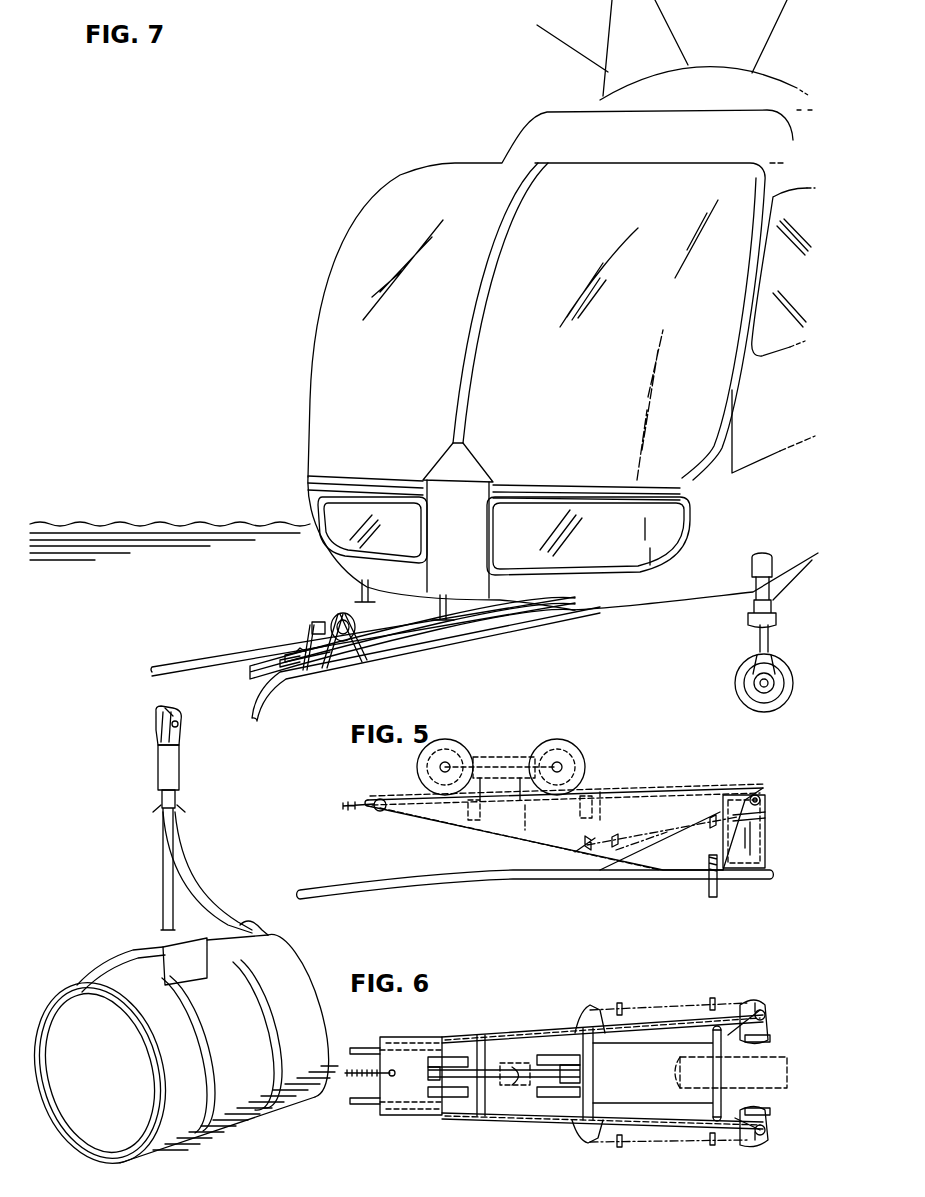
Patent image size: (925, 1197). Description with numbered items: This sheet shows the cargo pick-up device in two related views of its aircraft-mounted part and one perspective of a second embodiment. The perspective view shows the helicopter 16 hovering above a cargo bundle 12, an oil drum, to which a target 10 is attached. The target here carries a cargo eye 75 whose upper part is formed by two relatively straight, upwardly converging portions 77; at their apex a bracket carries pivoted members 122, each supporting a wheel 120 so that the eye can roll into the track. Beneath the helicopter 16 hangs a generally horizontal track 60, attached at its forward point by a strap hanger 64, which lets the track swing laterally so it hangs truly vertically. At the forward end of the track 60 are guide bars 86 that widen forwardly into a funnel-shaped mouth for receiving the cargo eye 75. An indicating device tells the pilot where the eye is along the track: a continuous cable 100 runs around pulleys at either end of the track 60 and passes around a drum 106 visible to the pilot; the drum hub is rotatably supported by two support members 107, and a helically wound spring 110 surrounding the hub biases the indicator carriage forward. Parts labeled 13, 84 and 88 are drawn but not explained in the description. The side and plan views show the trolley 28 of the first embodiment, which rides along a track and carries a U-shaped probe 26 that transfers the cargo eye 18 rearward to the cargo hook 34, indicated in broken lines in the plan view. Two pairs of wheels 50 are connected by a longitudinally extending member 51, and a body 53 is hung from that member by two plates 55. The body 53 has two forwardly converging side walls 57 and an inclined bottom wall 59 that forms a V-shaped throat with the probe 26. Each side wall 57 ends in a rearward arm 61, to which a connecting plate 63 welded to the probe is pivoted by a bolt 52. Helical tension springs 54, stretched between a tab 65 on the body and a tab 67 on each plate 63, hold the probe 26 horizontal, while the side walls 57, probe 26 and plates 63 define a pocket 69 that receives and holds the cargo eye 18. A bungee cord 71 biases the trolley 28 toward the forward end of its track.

In FIG. 7, the target 10 is at (200, 800).
In FIG. 7, the cargo bundle 12 is at (100, 950).
In FIG. 7, the cargo hook mount 13 is at (285, 699).
In FIG. 7, the helicopter 16 is at (275, 300).
In FIG. 5, the cargo eye 18 is at (722, 893).
In FIG. 6, the cargo eye 18 is at (713, 1085).
In FIG. 5, the probe 26 is at (348, 898).
In FIG. 6, the probe 26 is at (360, 1046).
In FIG. 5, the trolley 28 is at (733, 790).
In FIG. 6, the trolley 28 is at (525, 1030).
In FIG. 6, the cargo hook 34 is at (788, 1057).
In FIG. 5, the wheels 50 is at (460, 760).
In FIG. 6, the wheels 50 is at (440, 1100).
In FIG. 5, the longitudinally extending member 51 is at (520, 768).
In FIG. 6, the longitudinally extending member 51 is at (493, 1068).
In FIG. 5, the bolt 52 is at (765, 800).
In FIG. 6, the bolt 52 is at (765, 1010).
In FIG. 5, the body 53 is at (628, 786).
In FIG. 6, the body 53 is at (416, 1086).
In FIG. 5, the helical tension springs 54 is at (613, 860).
In FIG. 6, the helical tension springs 54 is at (620, 1003).
In FIG. 5, the plates 55 is at (518, 768).
In FIG. 6, the plates 55 is at (510, 1095).
In FIG. 5, the side walls 57 is at (435, 812).
In FIG. 6, the side walls 57 is at (470, 1037).
In FIG. 5, the bottom wall 59 is at (470, 830).
In FIG. 6, the bottom wall 59 is at (378, 1052).
In FIG. 7, the track 60 is at (422, 654).
In FIG. 5, the arm 61 is at (757, 790).
In FIG. 6, the arm 61 is at (740, 1012).
In FIG. 5, the connecting plates 63 is at (762, 856).
In FIG. 6, the connecting plates 63 is at (768, 1023).
In FIG. 7, the strap hanger 64 is at (452, 632).
In FIG. 5, the tab 65 is at (560, 848).
In FIG. 6, the tab 65 is at (590, 1003).
In FIG. 5, the tab 67 is at (768, 825).
In FIG. 6, the tab 67 is at (763, 1005).
In FIG. 5, the pocket 69 is at (758, 840).
In FIG. 7, the bungee or elastic cord 71 is at (202, 869).
In FIG. 5, the bungee or elastic cord 71 is at (372, 814).
In FIG. 6, the bungee or elastic cord 71 is at (345, 1080).
In FIG. 7, the cargo eye 75 is at (180, 770).
In FIG. 7, the upwardly converging portions 77 is at (157, 746).
In FIG. 7, the skid assembly 84 is at (228, 697).
In FIG. 7, the guide bars 86 is at (206, 654).
In FIG. 7, the skid tube 88 is at (425, 676).
In FIG. 7, the cable 100 is at (390, 652).
In FIG. 7, the drum 106 is at (343, 614).
In FIG. 7, the support members 107 is at (305, 640).
In FIG. 7, the spring 110 is at (318, 624).
In FIG. 7, the wheel 120 is at (183, 724).
In FIG. 7, the member 122 is at (183, 742).